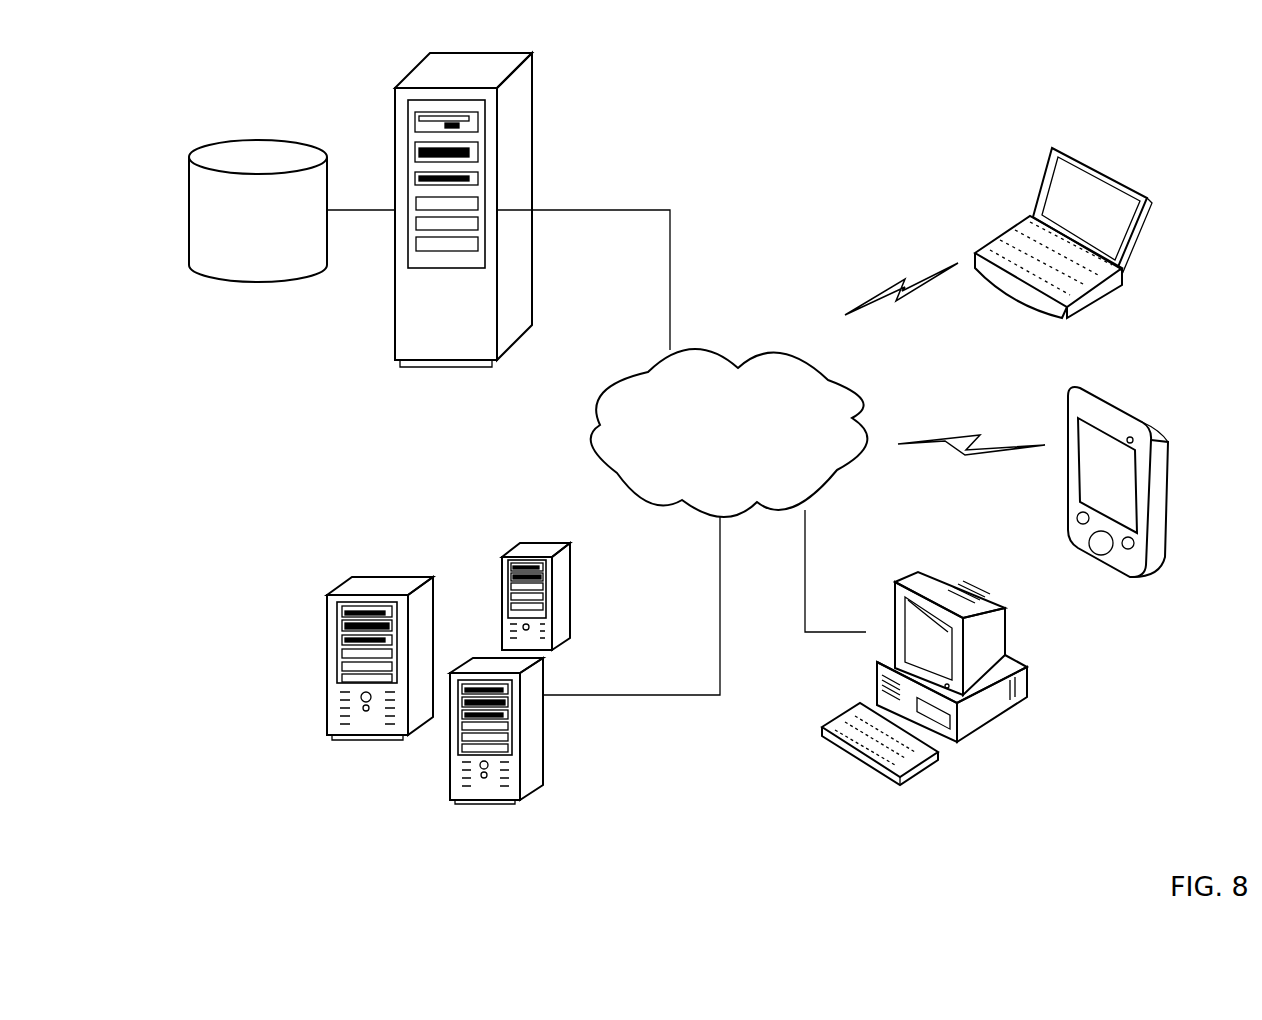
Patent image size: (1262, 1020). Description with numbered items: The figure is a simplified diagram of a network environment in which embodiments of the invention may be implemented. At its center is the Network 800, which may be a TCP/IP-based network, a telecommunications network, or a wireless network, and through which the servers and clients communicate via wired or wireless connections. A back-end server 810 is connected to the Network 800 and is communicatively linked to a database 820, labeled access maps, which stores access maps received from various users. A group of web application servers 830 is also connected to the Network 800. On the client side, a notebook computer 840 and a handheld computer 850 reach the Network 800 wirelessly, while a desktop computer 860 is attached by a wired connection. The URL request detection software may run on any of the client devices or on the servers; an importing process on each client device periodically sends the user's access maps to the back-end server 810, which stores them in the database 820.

The network 800 is at (703, 348).
The back-end server 810 is at (470, 53).
The database 820 is at (257, 138).
The web application servers 830 is at (360, 575).
The notebook computer 840 is at (1060, 141).
The handheld computer 850 is at (1130, 401).
The desktop computer 860 is at (950, 575).